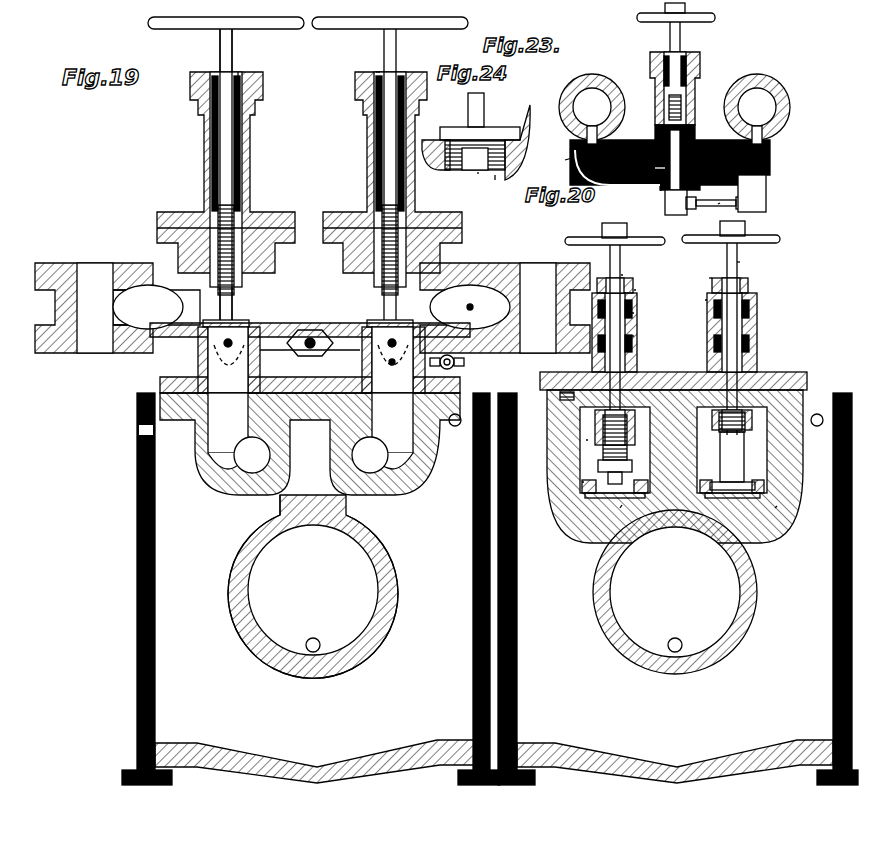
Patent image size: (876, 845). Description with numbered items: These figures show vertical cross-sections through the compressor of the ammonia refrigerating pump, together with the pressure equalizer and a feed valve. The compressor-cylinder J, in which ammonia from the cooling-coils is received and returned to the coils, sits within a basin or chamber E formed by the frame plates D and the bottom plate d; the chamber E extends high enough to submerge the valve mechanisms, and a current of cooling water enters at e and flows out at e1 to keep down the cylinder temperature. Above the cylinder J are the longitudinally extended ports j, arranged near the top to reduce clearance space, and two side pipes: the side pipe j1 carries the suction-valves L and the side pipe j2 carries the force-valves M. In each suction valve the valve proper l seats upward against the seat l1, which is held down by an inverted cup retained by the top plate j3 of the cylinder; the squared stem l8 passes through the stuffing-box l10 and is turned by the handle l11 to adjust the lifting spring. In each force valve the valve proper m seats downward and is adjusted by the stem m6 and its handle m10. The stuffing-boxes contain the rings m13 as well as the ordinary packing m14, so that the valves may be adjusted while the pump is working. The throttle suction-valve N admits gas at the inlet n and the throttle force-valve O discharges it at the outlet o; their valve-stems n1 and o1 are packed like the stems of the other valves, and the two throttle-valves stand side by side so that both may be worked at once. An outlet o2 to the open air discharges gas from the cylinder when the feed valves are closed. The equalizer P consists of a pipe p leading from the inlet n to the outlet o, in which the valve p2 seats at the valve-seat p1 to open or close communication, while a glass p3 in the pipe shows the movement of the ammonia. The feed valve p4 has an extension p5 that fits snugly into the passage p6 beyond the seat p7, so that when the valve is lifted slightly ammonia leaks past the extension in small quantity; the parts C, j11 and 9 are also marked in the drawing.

In FIG. 19, the throttle suction-valve N is at (226, 172).
In FIG. 19, the throttle force-valve O is at (390, 172).
In FIG. 19, the inlet n is at (117, 308).
In FIG. 23, the inlet n is at (592, 109).
In FIG. 19, the outlet o is at (505, 308).
In FIG. 23, the outlet o is at (757, 109).
In FIG. 19, the valve-stem n1 is at (245, 55).
In FIG. 19, the valve-stem o1 is at (378, 54).
In FIG. 19, the outlet to the open air o2 is at (395, 372).
In FIG. 19, the water entrance e is at (135, 432).
In FIG. 19, the water outlet e1 is at (447, 403).
In FIG. 20, the water outlet e1 is at (817, 420).
In FIG. 19, the side pipe j1 is at (215, 462).
In FIG. 20, the side pipe j1 is at (620, 508).
In FIG. 19, the side pipe j2 is at (395, 485).
In FIG. 20, the side pipe j2 is at (775, 508).
In FIG. 20, the top plate j3 is at (672, 360).
In FIG. 20, the ports j is at (689, 543).
In FIG. 20, the plug j11 is at (572, 400).
In FIG. 19, the compressor-cylinder J is at (313, 586).
In FIG. 20, the compressor-cylinder J is at (675, 592).
In FIG. 19, the wall C is at (142, 589).
In FIG. 19, the plates D is at (475, 652).
In FIG. 20, the plates D is at (520, 662).
In FIG. 19, the chamber E is at (310, 710).
In FIG. 20, the chamber E is at (675, 714).
In FIG. 19, the bottom plate d is at (315, 757).
In FIG. 20, the bottom plate d is at (675, 757).
In FIG. 23, the equalizer P is at (670, 109).
In FIG. 24, the pipe p is at (485, 196).
In FIG. 23, the valve-seat p1 is at (605, 162).
In FIG. 23, the valve p2 is at (652, 162).
In FIG. 23, the glass p3 is at (727, 193).
In FIG. 24, the feed valve p4 is at (480, 116).
In FIG. 23, the feed valve p4 is at (660, 190).
In FIG. 24, the extension p5 is at (485, 172).
In FIG. 24, the passage p6 is at (495, 180).
In FIG. 24, the seat p7 is at (522, 160).
In FIG. 23, the seat p7 is at (559, 156).
In FIG. 20, the suction-valves L is at (615, 360).
In FIG. 20, the valve proper l is at (582, 482).
In FIG. 20, the seat l1 is at (586, 440).
In FIG. 20, the stem l8 is at (623, 275).
In FIG. 20, the stuffing-box l10 is at (636, 290).
In FIG. 20, the handle l11 is at (586, 236).
In FIG. 20, the force-valves M is at (733, 359).
In FIG. 20, the valve proper m is at (698, 292).
In FIG. 20, the stem m6 is at (748, 262).
In FIG. 20, the handle m10 is at (787, 230).
In FIG. 20, the rings m13 is at (634, 313).
In FIG. 20, the packing m14 is at (634, 336).
In FIG. 20, the stem 9 is at (706, 270).